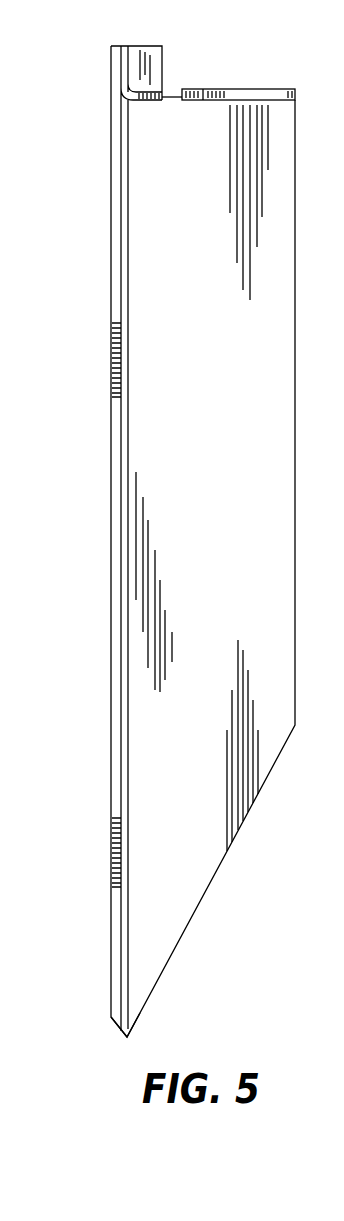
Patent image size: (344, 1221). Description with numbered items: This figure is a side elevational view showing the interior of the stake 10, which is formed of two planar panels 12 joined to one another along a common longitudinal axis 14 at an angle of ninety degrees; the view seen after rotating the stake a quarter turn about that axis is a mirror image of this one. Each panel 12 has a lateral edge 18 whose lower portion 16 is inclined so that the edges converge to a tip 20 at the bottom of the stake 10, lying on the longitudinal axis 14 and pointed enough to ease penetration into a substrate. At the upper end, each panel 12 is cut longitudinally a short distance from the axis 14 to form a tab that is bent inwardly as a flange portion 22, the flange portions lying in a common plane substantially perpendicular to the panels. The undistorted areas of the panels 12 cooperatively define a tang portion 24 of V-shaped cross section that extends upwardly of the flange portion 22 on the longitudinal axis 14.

The stake 10 is at (111, 608).
The planar panel 12 is at (156, 447).
The longitudinal axis 14 is at (126, 752).
The lower portion 16 is at (203, 895).
The lateral edge 18 is at (112, 250).
The tip 20 is at (127, 1037).
The flange portion 22 is at (198, 100).
The tang portion 24 is at (155, 53).